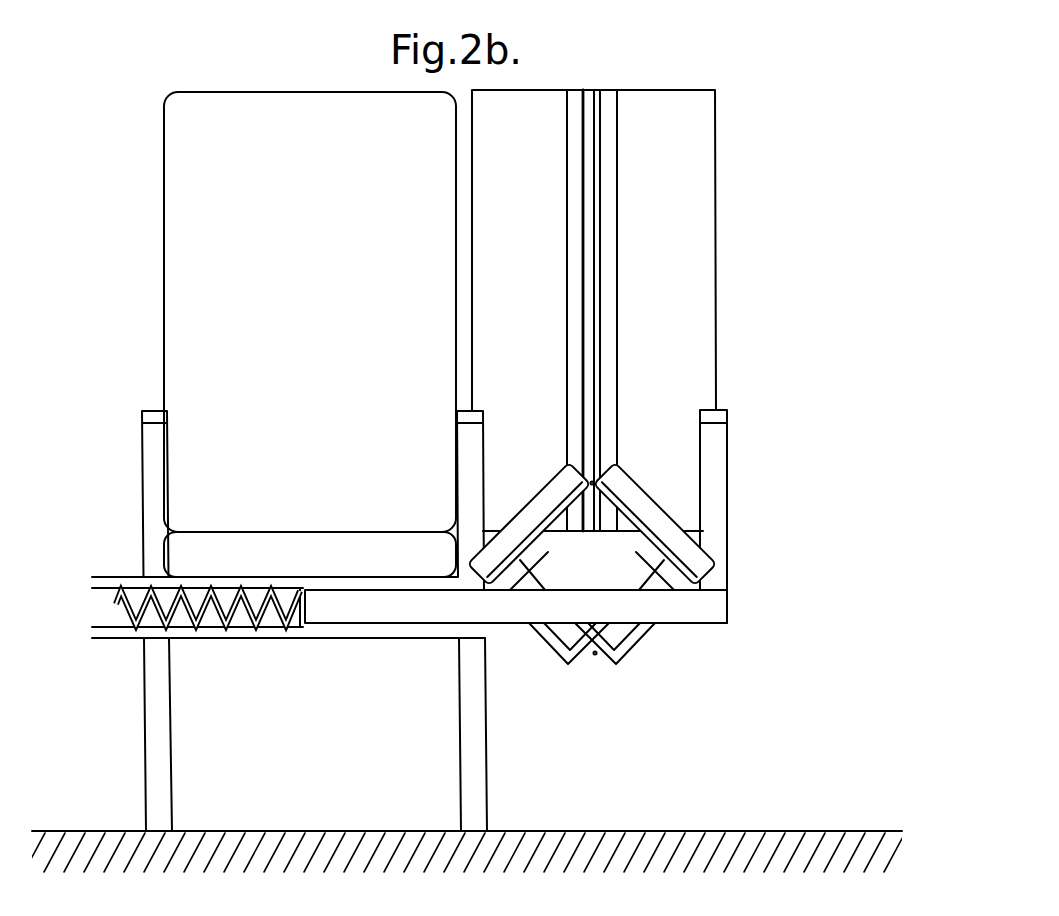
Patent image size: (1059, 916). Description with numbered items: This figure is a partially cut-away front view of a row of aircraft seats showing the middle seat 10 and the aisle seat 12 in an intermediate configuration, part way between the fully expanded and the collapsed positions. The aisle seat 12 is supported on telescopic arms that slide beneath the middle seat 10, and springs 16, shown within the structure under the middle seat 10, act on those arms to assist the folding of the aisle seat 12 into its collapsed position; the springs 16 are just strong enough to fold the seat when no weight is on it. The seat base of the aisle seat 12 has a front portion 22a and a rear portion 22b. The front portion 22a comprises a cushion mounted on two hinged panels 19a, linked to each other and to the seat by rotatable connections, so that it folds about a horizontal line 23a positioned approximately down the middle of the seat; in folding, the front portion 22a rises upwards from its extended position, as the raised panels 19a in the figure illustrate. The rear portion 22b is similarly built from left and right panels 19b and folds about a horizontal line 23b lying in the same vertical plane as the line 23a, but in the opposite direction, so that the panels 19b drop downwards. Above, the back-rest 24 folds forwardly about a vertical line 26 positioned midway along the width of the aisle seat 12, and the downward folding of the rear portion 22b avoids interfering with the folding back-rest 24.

The middle seat 10 is at (318, 338).
The aisle seat 12 is at (523, 305).
The springs 16 is at (243, 618).
The hinged panels 19a is at (525, 517).
The left and right panels 19b is at (568, 633).
The front portion 22a is at (667, 522).
The rear portion 22b is at (622, 635).
The horizontal line 23a is at (597, 485).
The horizontal line 23b is at (595, 653).
The back-rest 24 is at (702, 232).
The vertical line 26 is at (593, 107).